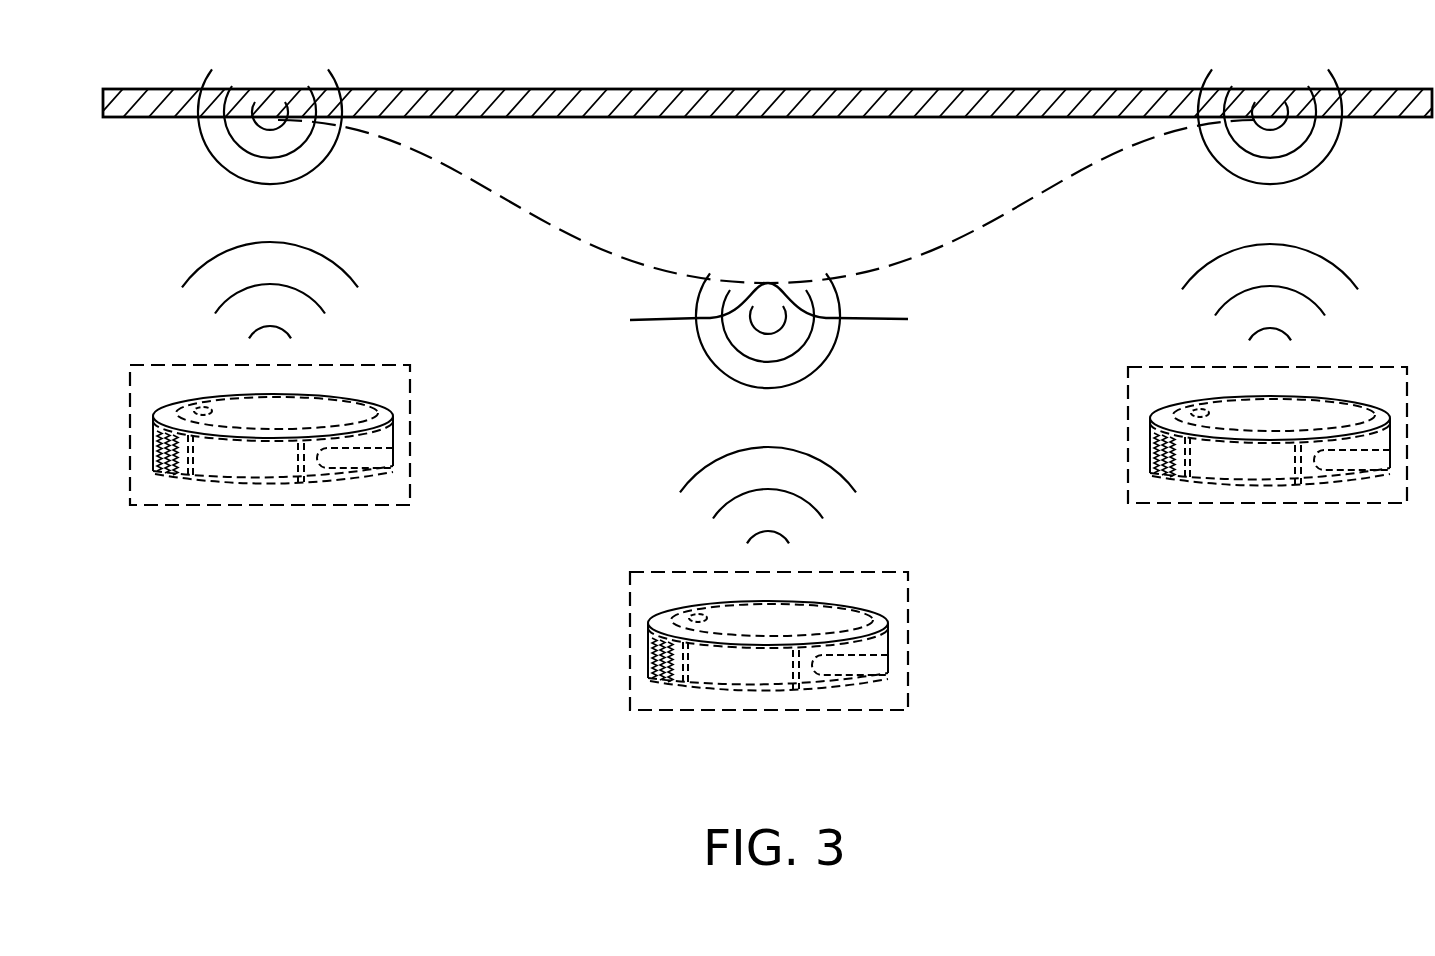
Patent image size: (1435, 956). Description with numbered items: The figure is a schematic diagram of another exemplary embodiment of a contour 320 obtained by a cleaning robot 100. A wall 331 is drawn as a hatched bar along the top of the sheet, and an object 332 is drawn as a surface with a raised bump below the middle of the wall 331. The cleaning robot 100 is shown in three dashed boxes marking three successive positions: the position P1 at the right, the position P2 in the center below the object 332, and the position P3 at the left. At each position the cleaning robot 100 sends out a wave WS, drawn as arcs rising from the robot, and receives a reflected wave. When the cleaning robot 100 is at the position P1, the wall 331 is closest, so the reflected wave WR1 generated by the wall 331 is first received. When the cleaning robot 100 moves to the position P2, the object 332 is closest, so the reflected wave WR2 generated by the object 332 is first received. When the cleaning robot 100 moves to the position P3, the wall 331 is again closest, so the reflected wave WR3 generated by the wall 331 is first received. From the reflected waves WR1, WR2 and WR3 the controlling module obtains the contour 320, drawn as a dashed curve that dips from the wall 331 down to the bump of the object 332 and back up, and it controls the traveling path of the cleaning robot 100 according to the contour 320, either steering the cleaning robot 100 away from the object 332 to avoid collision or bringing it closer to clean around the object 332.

The wall 331 is at (767, 100).
The contour 320 is at (1025, 210).
The object 332 is at (663, 318).
The cleaning robot 100 is at (1207, 482).
The position P1 is at (1268, 506).
The position P2 is at (768, 712).
The position P3 is at (271, 507).
The transmitted wave WS is at (766, 400).
The reflected wave WR1 is at (1276, 147).
The reflected wave WR2 is at (776, 351).
The reflected wave WR3 is at (277, 147).